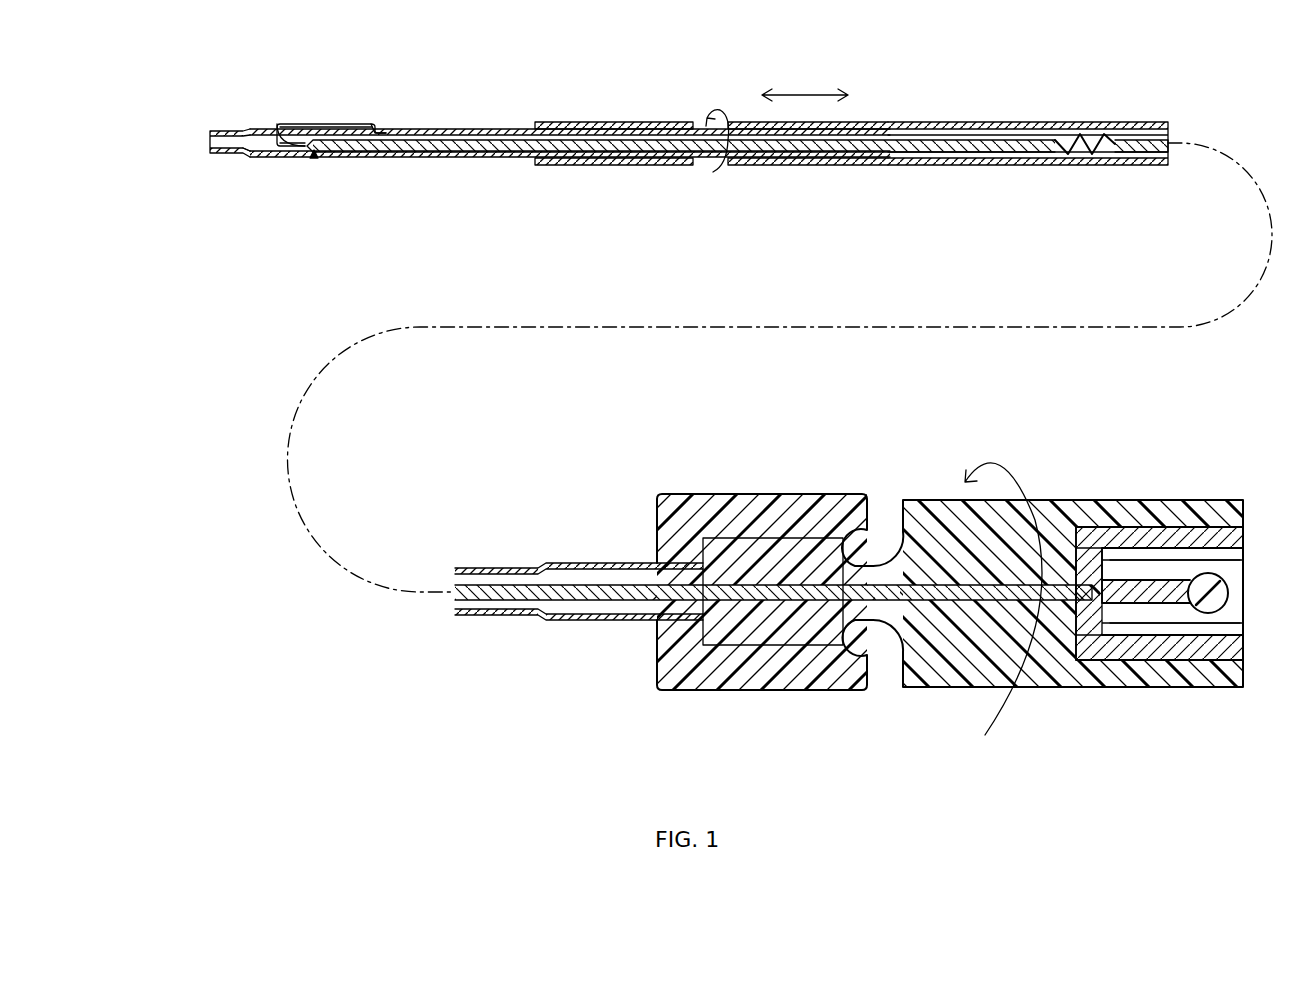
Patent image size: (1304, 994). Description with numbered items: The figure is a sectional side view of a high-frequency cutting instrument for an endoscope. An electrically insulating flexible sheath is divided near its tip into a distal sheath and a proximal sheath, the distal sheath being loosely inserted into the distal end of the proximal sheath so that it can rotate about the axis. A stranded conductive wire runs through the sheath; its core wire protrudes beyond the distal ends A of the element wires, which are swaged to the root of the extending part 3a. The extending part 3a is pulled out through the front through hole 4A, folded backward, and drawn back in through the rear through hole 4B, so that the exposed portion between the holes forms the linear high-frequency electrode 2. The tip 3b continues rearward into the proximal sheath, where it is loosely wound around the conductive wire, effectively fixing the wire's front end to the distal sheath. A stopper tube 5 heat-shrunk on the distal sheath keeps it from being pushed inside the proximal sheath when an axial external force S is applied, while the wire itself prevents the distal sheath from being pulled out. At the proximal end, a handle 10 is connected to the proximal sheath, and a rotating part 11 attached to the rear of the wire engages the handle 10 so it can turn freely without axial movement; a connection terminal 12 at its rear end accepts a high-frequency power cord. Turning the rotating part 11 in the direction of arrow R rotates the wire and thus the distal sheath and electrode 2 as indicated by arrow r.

The high-frequency electrode 2 is at (334, 122).
The extending part of the core wire 3a is at (280, 158).
The tip of the extending part 3b is at (1098, 160).
The front through hole 4A is at (277, 126).
The rear through hole 4B is at (376, 128).
The stopper tube 5 is at (608, 122).
The handle 10 is at (768, 494).
The rotating part 11 is at (1058, 500).
The connection terminal 12 is at (1165, 580).
The distal ends of the element wires A is at (314, 158).
The external force S is at (805, 83).
The arrow R is at (1003, 579).
The arrow r is at (717, 157).